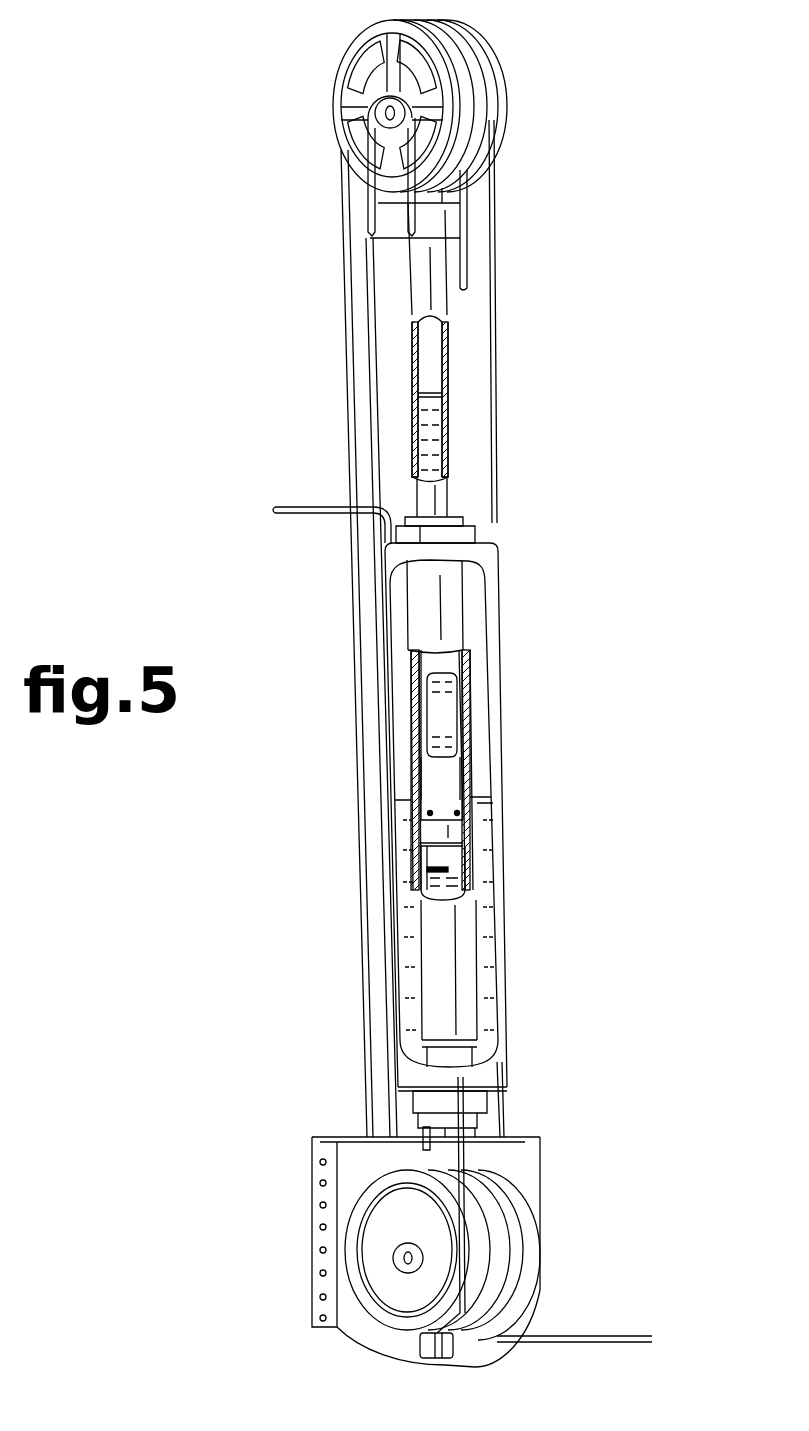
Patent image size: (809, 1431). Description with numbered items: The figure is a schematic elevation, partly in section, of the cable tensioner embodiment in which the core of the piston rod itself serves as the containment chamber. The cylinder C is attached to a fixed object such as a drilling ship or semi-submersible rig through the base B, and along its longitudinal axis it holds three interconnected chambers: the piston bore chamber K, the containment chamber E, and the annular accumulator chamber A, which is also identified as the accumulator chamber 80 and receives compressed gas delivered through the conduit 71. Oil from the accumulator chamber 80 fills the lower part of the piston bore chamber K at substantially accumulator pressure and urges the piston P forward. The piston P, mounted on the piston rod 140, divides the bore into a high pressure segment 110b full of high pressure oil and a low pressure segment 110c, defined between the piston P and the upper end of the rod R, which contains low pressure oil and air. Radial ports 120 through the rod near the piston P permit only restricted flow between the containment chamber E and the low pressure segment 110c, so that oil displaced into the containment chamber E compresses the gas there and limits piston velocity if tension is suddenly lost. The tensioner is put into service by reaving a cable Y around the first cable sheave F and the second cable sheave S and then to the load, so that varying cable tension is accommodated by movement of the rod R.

The second cable sheave S is at (498, 68).
The cable Y is at (358, 918).
The piston rod R is at (453, 442).
The containment chamber E is at (433, 360).
The piston rod 140 is at (413, 437).
The conduit 71 is at (303, 505).
The cylinder C is at (497, 617).
The accumulator chamber A is at (483, 627).
The piston bore chamber K is at (427, 703).
The low pressure segment 110c is at (430, 750).
The accumulator chamber 80 is at (407, 768).
The radial ports 120 is at (427, 812).
The piston P is at (443, 873).
The high pressure segment 110b is at (427, 892).
The base B is at (353, 1340).
The first cable sheave F is at (548, 1268).